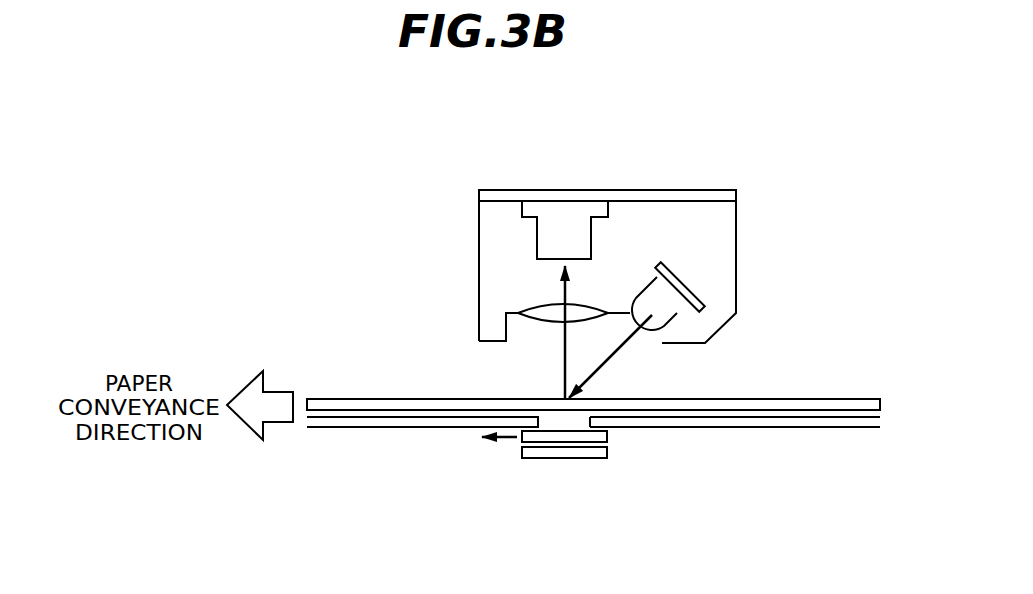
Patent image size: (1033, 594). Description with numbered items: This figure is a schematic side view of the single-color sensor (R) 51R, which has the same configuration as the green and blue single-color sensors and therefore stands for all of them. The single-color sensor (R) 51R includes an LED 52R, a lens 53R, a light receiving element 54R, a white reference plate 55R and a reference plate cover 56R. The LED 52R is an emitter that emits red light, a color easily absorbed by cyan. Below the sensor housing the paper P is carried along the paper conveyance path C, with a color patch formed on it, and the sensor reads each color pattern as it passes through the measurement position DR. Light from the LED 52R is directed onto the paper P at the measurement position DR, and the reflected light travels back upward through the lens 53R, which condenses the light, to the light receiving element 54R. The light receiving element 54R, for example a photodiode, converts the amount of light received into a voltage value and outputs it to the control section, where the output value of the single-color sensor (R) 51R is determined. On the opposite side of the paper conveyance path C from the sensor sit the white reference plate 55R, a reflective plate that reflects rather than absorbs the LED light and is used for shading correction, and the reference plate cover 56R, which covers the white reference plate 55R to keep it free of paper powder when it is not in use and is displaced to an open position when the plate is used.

The single-color sensor (R) 51R is at (704, 112).
The LED 52R is at (673, 300).
The lens 53R is at (540, 310).
The light receiving element 54R is at (537, 235).
The white reference plate 55R is at (567, 453).
The reference plate cover 56R is at (603, 437).
The measurement position DR is at (553, 396).
The paper P is at (357, 399).
The paper conveyance path C is at (357, 423).